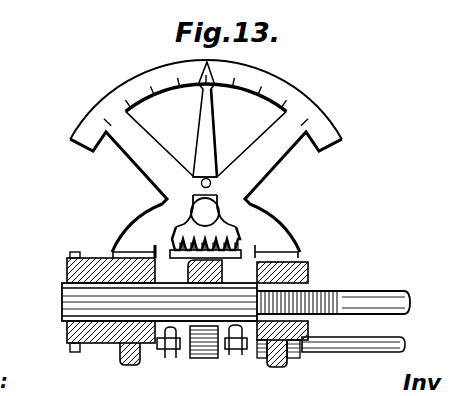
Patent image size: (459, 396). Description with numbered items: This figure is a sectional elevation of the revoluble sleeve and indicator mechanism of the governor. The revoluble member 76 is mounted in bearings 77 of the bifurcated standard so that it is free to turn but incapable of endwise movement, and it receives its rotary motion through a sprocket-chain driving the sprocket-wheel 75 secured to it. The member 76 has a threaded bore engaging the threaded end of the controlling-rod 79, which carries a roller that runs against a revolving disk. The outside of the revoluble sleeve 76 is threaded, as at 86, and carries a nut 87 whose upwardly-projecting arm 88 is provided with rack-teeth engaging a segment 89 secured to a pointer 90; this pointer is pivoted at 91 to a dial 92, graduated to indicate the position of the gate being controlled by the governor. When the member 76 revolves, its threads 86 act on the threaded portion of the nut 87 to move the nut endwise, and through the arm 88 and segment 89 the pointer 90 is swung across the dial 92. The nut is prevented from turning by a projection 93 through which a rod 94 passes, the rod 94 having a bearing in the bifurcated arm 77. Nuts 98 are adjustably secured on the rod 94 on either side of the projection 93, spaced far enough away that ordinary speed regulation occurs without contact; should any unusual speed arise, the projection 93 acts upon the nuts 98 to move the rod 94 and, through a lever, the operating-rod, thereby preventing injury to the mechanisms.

The sprocket-wheel 75 is at (113, 256).
The revoluble member 76 is at (62, 299).
The bearings 77 is at (130, 353).
The controlling-rod 79 is at (364, 298).
The threaded portion 86 is at (258, 268).
The nut 87 is at (193, 273).
The upwardly-projecting arm 88 is at (243, 244).
The segment 89 is at (183, 214).
The pointer 90 is at (208, 120).
The pivot 91 is at (207, 209).
The dial 92 is at (206, 156).
The projection 93 is at (207, 359).
The rod 94 is at (340, 348).
The nuts 98 is at (169, 359).